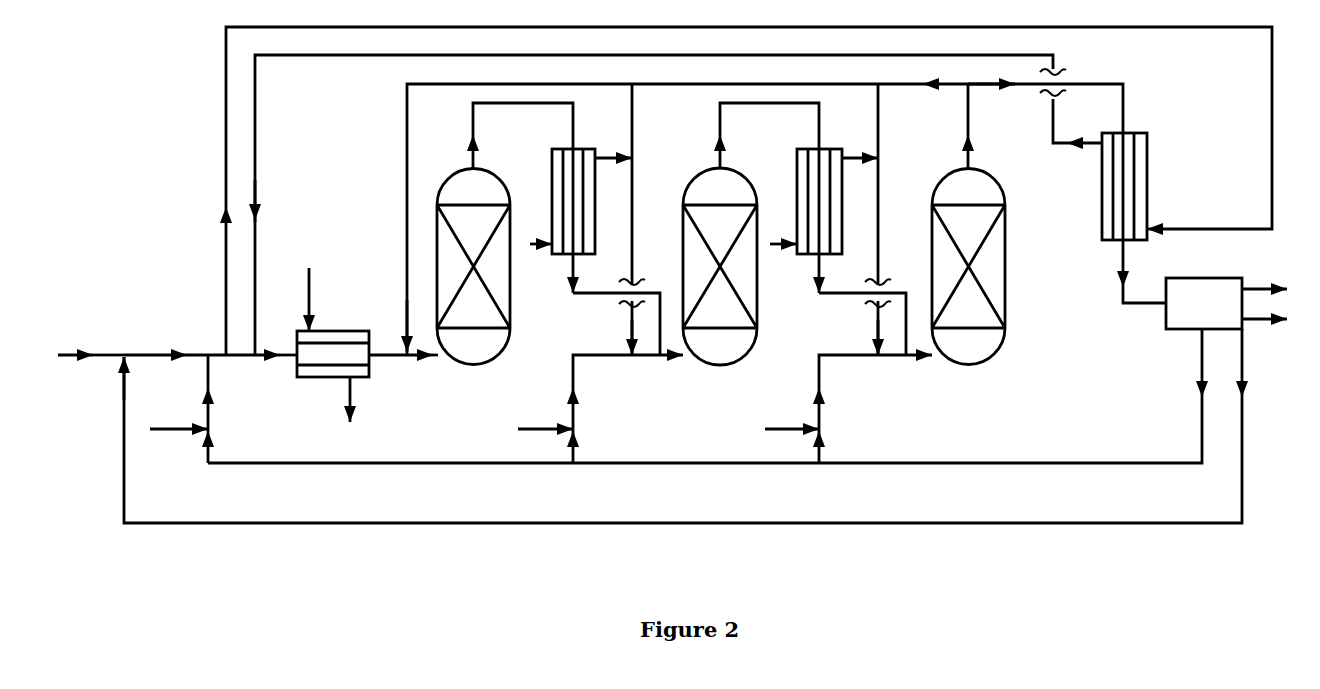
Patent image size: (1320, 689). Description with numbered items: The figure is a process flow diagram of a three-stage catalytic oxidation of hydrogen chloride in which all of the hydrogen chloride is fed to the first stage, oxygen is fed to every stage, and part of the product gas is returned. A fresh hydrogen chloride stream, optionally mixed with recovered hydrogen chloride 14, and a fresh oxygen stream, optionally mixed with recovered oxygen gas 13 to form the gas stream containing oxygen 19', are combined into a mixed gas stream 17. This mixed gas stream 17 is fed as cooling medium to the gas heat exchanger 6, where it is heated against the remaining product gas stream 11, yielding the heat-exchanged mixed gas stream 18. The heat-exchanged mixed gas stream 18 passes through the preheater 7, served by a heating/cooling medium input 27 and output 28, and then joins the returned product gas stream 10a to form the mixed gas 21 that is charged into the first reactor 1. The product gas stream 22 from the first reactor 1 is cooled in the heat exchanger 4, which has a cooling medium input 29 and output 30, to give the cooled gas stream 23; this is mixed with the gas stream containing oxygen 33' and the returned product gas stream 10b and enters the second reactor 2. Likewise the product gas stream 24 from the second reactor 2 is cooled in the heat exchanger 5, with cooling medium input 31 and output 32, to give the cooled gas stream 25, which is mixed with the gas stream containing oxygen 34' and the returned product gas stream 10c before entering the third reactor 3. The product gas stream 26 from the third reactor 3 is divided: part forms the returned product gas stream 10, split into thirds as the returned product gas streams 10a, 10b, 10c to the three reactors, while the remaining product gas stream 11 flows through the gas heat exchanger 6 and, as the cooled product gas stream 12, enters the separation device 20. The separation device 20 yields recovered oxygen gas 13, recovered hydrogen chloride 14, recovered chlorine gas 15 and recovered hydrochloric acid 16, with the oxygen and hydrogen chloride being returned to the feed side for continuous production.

The first reactor 1 is at (473, 267).
The second reactor 2 is at (720, 266).
The third reactor 3 is at (968, 267).
The heat exchanger 4 is at (564, 201).
The heat exchanger 5 is at (811, 201).
The gas heat exchanger 6 is at (1115, 186).
The preheater 7 is at (333, 342).
The returned product gas stream 10 is at (711, 206).
The returned product gas stream entering the first reactor 10a is at (389, 326).
The returned product gas stream entering the second reactor 10b is at (620, 219).
The returned product gas stream entering the third reactor 10c is at (861, 219).
The remaining product gas stream 11 is at (1045, 95).
The product gas stream after being cooled through the gas heat exchanger 12 is at (1144, 271).
The recovered oxygen gas 13 is at (705, 396).
The recovered hydrogen chloride 14 is at (698, 426).
The recovered chlorine gas 15 is at (1279, 288).
The recovered hydrochloric acid 16 is at (1279, 319).
The mixed gas stream 17 is at (730, 191).
The heat-exchanged mixed gas stream 18 is at (678, 205).
The gas stream containing oxygen to be provided to the first reactor 19' is at (224, 409).
The separation device 20 is at (1204, 303).
The mixed gas 21 is at (422, 384).
The product gas stream from the first reactor 22 is at (505, 135).
The gas stream entering the second reactor after being cooled through the heat excha 23 is at (600, 304).
The product gas stream from the second reactor 24 is at (753, 135).
The gas stream entering the third reactor after being cooled through the heat exchan 25 is at (844, 304).
The product gas stream from the third reactor 26 is at (949, 126).
The input of a heating/cooling medium 27 is at (295, 297).
The output of the heating/cooling medium 28 is at (329, 400).
The input of a cooling medium 29 is at (535, 232).
The output of the cooling medium 30 is at (612, 144).
The input of a cooling medium 31 is at (781, 232).
The output of the cooling medium 32 is at (858, 144).
The gas stream containing oxygen to be provided to the second reactor 33' is at (628, 409).
The gas stream containing oxygen to be provided to the third reactor 34' is at (875, 409).